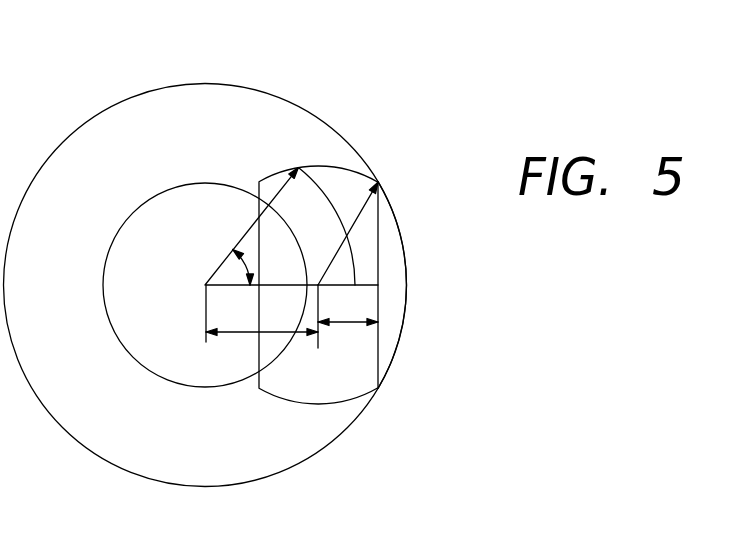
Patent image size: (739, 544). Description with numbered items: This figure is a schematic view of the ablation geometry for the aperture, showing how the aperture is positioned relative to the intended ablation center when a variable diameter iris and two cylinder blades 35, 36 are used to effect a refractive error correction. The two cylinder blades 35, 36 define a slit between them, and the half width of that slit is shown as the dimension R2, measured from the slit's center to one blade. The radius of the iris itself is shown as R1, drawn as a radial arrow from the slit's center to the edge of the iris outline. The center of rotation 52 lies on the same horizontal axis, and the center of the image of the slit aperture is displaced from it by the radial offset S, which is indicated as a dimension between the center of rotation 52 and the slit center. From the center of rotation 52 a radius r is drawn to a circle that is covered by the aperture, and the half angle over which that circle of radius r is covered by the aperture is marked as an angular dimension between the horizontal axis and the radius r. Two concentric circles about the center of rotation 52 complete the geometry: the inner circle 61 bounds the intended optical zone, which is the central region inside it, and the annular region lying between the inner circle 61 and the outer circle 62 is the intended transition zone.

The cylinder blade 35 is at (259, 348).
The cylinder blade 36 is at (392, 273).
The center of rotation 52 is at (206, 286).
The circle bounding the optical zone 61 is at (208, 183).
The outer circle of the transition zone 62 is at (312, 113).
The radius of circle covered by the aperture r is at (245, 233).
The radius of the iris R1 is at (362, 207).
The half width of the slit R2 is at (348, 322).
The radial offset S is at (196, 383).